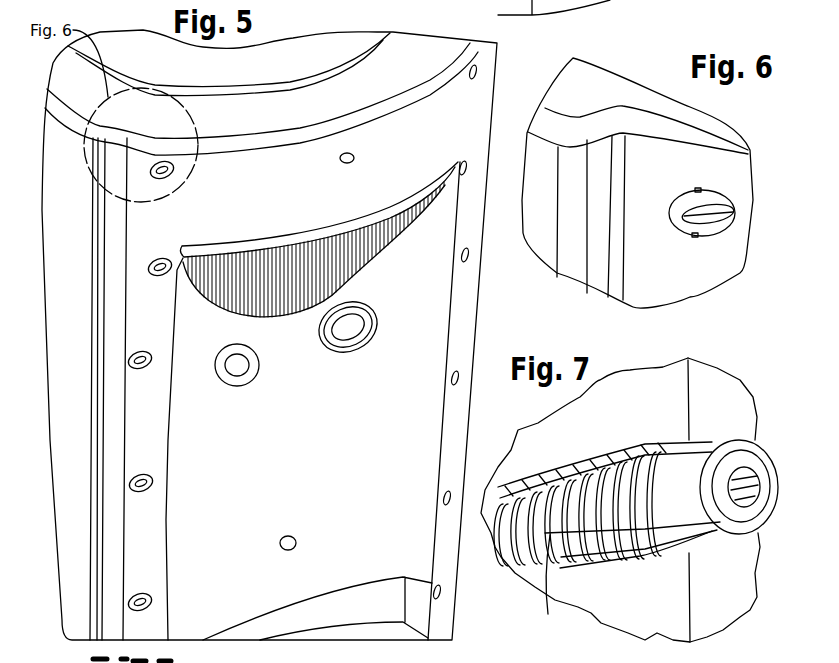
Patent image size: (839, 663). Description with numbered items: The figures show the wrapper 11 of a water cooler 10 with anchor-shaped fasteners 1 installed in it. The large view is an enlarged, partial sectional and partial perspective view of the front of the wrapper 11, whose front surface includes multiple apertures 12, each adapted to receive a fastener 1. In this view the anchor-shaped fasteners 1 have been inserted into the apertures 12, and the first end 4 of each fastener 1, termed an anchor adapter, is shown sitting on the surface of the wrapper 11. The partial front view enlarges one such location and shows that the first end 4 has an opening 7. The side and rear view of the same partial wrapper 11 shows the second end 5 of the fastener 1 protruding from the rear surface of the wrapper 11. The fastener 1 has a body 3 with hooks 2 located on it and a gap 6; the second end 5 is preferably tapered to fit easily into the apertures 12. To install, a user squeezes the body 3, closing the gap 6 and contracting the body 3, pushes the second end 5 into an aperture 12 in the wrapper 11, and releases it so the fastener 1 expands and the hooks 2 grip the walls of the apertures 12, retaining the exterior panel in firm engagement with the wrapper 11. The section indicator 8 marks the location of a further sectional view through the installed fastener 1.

In FIG. 7, the fastener 1 is at (627, 578).
In FIG. 7, the hooks 2 is at (567, 460).
In FIG. 7, the body 3 is at (540, 518).
In FIG. 5, the first end 4 is at (133, 474).
In FIG. 6, the first end 4 is at (720, 203).
In FIG. 7, the second end 5 is at (703, 527).
In FIG. 7, the gap 6 is at (708, 440).
In FIG. 5, the opening 7 is at (158, 263).
In FIG. 6, the opening 7 is at (723, 222).
In FIG. 6, the section line VIII-VIII 8 is at (540, 95).
In FIG. 5, the water cooler 10 is at (42, 345).
In FIG. 5, the wrapper 11 is at (78, 227).
In FIG. 6, the wrapper 11 is at (712, 165).
In FIG. 7, the wrapper 11 is at (678, 375).
In FIG. 5, the apertures 12 is at (458, 377).